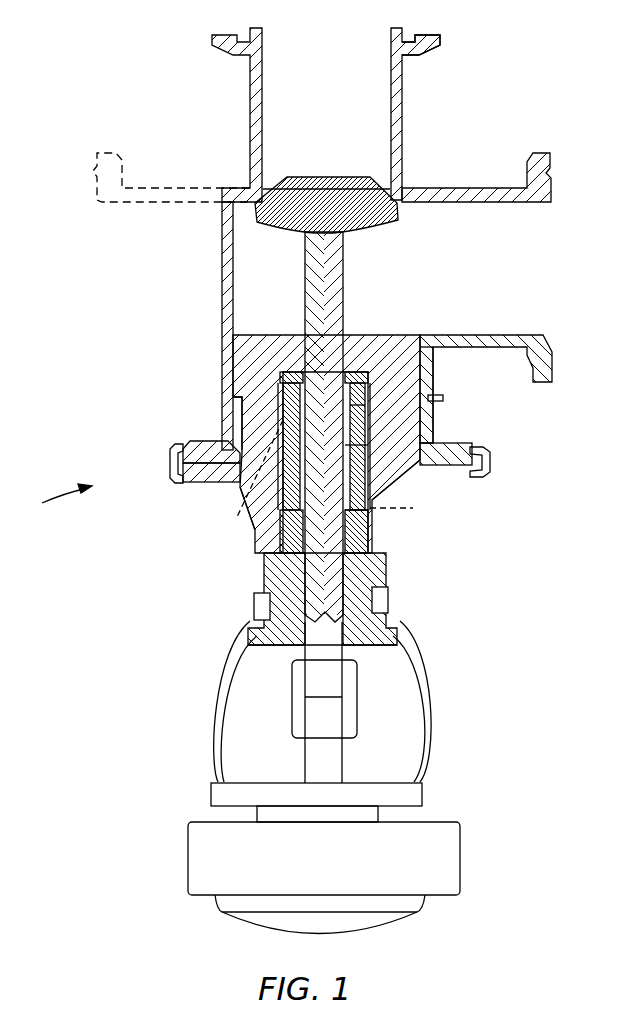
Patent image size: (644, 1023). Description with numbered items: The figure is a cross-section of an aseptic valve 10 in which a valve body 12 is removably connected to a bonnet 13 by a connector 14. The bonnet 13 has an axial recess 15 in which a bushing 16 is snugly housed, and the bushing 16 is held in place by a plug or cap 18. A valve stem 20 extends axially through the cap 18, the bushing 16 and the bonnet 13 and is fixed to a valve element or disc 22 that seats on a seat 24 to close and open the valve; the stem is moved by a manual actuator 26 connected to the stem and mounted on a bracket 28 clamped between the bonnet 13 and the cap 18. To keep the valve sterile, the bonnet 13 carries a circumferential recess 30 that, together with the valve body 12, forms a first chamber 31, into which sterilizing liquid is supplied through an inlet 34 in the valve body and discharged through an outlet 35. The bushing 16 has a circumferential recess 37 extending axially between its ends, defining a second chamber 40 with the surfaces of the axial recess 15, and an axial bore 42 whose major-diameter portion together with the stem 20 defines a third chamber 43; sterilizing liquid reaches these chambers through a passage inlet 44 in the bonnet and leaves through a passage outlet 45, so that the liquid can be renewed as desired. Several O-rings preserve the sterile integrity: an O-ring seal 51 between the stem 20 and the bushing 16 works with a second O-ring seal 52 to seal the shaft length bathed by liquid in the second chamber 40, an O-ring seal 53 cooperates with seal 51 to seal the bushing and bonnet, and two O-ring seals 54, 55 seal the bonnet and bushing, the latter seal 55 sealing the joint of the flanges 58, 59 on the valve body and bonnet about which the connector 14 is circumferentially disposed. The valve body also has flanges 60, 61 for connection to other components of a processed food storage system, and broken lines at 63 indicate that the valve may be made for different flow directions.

The valve 10 is at (48, 502).
The valve body 12 is at (401, 104).
The bonnet 13 is at (403, 320).
The connector 14 is at (170, 467).
The axial recess 15 is at (352, 375).
The bushing 16 is at (280, 382).
The plug or cap 18 is at (376, 618).
The valve stem 20 is at (342, 270).
The valve element or disc 22 is at (398, 218).
The seat 24 is at (392, 193).
The manual actuator 26 is at (455, 860).
The bracket 28 is at (427, 712).
The circumferential recess 30 is at (240, 402).
The first chamber 31 is at (418, 437).
The inlet 34 is at (222, 448).
The outlet 35 is at (443, 401).
The circumferential recess 37 is at (363, 405).
The second chamber 40 is at (298, 506).
The axial bore 42 is at (345, 445).
The third chamber 43 is at (260, 530).
The passage inlet 44 is at (368, 522).
The passage outlet 45 is at (234, 516).
The O-ring seal 51 is at (296, 342).
The second O-ring seal 52 is at (388, 585).
The O-ring seal 53 is at (350, 528).
The O-ring seal 54 is at (421, 352).
The O-ring seal 55 is at (422, 468).
The flange 58 is at (477, 445).
The flange 59 is at (418, 510).
The flange 60 is at (545, 358).
The flange 61 is at (420, 45).
The broken lines 63 is at (157, 203).